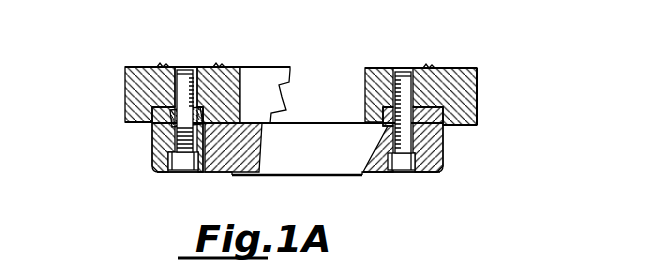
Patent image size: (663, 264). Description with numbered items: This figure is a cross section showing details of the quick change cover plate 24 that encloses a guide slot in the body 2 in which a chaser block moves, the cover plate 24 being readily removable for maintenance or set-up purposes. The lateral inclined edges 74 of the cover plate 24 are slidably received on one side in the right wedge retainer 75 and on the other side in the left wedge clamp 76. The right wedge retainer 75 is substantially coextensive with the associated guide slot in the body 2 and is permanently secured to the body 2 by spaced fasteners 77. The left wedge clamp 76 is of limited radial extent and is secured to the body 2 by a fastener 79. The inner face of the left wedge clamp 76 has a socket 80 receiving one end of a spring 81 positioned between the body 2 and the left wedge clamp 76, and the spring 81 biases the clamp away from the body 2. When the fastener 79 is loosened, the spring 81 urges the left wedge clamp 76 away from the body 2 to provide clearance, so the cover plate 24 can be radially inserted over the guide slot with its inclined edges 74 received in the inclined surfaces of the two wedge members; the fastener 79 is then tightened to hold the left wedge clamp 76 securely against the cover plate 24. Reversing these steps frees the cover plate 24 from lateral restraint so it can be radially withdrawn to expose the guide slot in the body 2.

The body 2 is at (140, 75).
The quick change cover plate 24 is at (310, 164).
The lateral inclined edges 74 is at (210, 176).
The right wedge retainer 75 is at (433, 171).
The left wedge clamp 76 is at (162, 160).
The fasteners 77 is at (402, 77).
The fastener 79 is at (175, 137).
The socket 80 is at (158, 128).
The spring 81 is at (172, 96).